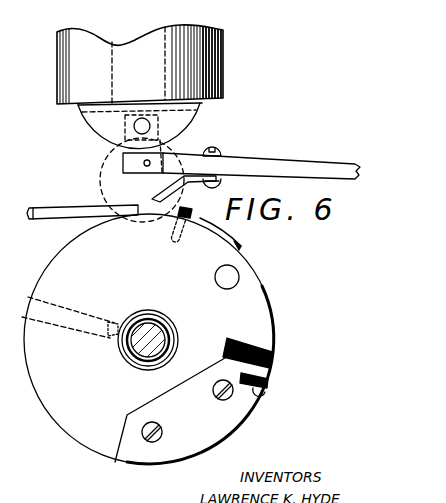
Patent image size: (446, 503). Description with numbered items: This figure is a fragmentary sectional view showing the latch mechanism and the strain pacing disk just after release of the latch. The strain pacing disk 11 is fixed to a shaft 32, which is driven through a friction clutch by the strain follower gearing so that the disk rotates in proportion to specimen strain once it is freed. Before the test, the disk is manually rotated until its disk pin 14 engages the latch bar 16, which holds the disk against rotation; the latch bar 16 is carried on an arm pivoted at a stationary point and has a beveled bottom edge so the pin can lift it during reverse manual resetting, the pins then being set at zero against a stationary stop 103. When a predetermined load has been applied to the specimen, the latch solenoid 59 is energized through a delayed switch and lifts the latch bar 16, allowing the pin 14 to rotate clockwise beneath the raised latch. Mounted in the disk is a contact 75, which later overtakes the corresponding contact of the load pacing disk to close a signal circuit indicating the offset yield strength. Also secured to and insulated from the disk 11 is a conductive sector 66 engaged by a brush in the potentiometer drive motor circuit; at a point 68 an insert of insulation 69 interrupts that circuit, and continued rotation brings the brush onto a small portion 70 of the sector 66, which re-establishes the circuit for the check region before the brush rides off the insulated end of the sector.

The latch solenoid 59 is at (210, 62).
The latch bar 16 is at (168, 187).
The stationary stop 103 is at (53, 210).
The disk pin 14 is at (188, 220).
The strain pacing disk 11 is at (263, 287).
The contact 75 is at (215, 280).
The shaft 32 is at (126, 354).
The sector 66 is at (128, 456).
The small portion of the sector 70 is at (270, 373).
The insert of insulation 69 is at (272, 382).
The point 68 is at (258, 389).